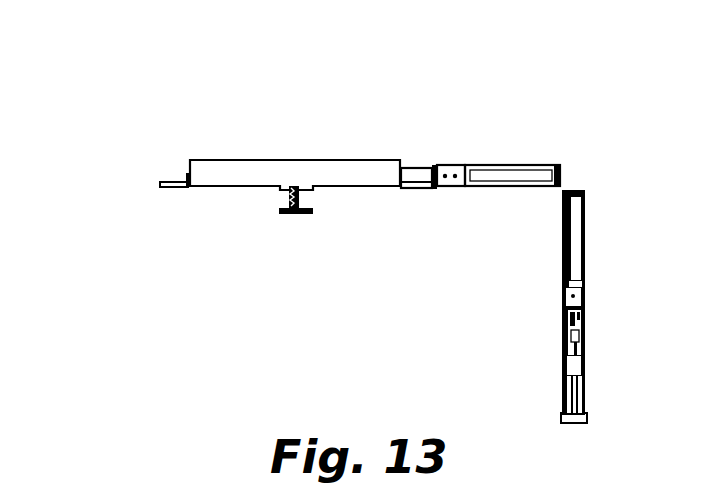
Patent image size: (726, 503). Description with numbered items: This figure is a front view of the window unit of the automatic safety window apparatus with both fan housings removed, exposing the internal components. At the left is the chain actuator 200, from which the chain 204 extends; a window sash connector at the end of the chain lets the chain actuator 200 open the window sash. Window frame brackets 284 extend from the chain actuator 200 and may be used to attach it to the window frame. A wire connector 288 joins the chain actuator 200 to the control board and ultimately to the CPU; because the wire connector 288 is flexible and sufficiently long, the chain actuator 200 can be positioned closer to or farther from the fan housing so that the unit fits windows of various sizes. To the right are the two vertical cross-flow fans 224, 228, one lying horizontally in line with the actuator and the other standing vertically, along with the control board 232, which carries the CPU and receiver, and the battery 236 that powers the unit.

The chain actuator 200 is at (255, 163).
The chain 204 is at (290, 201).
The window frame brackets 284 is at (160, 183).
The wire connector 288 is at (413, 165).
The vertical cross-flow fan 224 is at (505, 165).
The vertical cross-flow fan 228 is at (583, 238).
The control board 232 is at (585, 333).
The battery 236 is at (585, 395).